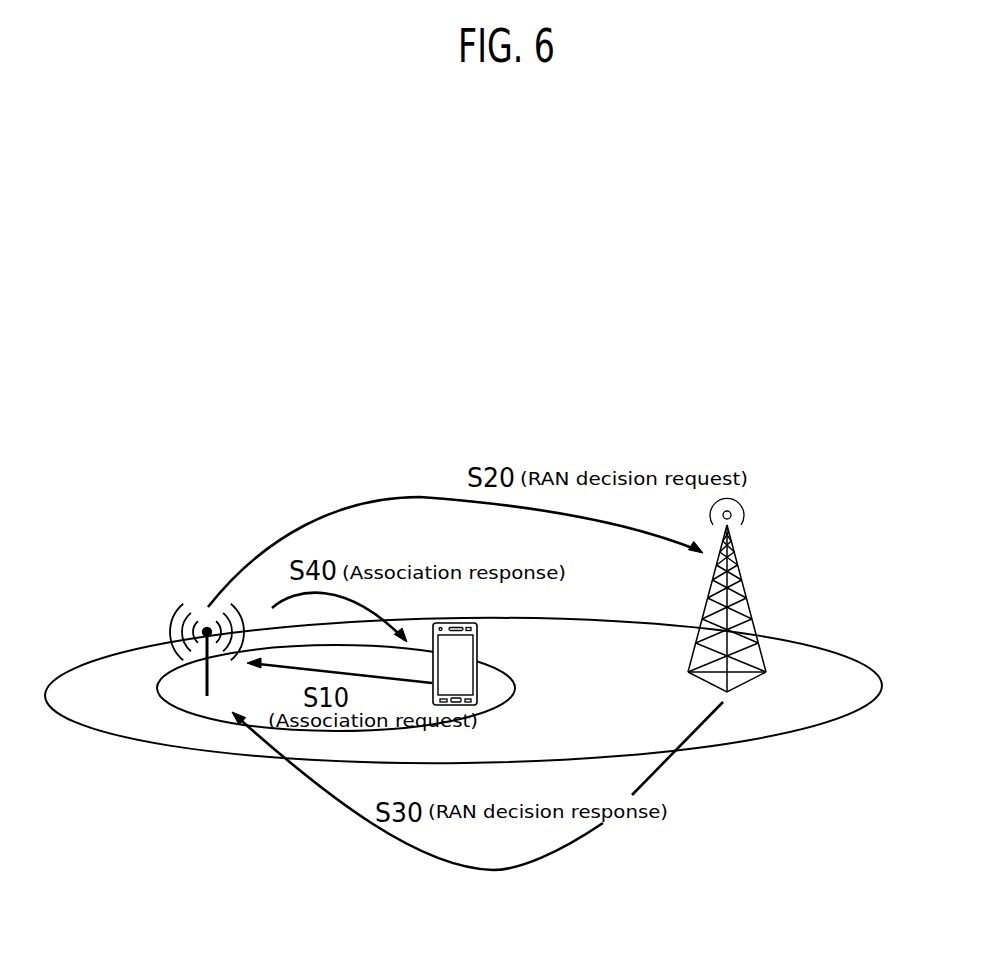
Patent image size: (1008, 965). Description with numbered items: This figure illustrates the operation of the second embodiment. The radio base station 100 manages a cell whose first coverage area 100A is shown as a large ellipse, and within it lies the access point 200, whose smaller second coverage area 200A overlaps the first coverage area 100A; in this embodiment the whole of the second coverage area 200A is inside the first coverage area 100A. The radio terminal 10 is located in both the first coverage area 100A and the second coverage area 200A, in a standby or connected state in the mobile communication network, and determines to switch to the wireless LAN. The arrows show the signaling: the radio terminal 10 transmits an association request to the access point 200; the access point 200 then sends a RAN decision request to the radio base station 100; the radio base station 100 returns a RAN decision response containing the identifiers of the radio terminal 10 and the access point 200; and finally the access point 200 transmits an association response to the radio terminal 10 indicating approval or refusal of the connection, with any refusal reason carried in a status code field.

The radio terminal 10 is at (477, 657).
The radio base station 100 is at (741, 576).
The first coverage area 100A is at (820, 727).
The access point 200 is at (202, 682).
The second coverage area 200A is at (193, 713).